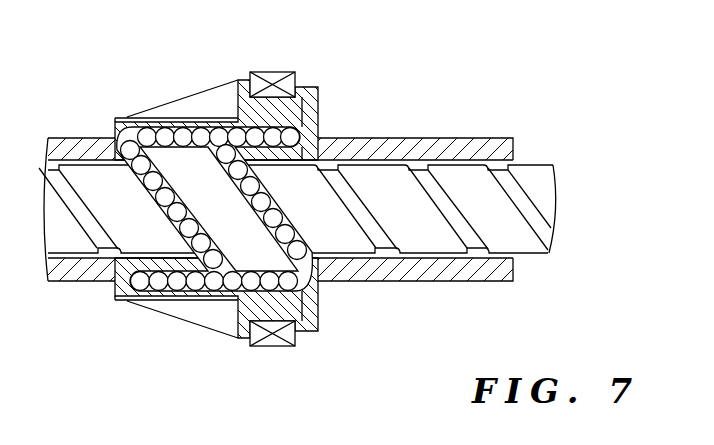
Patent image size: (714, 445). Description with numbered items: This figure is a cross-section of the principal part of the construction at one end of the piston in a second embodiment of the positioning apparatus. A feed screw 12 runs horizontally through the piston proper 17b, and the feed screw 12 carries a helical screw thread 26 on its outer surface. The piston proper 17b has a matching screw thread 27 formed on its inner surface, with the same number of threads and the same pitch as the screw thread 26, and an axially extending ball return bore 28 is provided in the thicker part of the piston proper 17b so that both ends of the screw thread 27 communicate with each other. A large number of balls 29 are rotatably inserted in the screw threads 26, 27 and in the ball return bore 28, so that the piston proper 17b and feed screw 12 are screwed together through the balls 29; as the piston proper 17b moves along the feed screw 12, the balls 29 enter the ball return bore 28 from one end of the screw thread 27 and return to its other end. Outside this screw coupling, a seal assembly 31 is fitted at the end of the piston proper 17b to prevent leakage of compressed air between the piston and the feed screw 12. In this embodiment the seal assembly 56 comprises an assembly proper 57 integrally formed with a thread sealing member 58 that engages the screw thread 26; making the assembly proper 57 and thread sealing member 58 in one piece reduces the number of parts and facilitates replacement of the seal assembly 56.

The feed screw 12 is at (566, 191).
The piston proper 17b is at (133, 104).
The screw thread 26 is at (468, 224).
The screw thread 27 is at (119, 141).
The ball return bore 28 is at (214, 126).
The balls 29 is at (146, 190).
The seal assembly 31 is at (355, 108).
The seal assembly 56 is at (550, 74).
The assembly proper 57 is at (491, 160).
The thread sealing member 58 is at (428, 164).